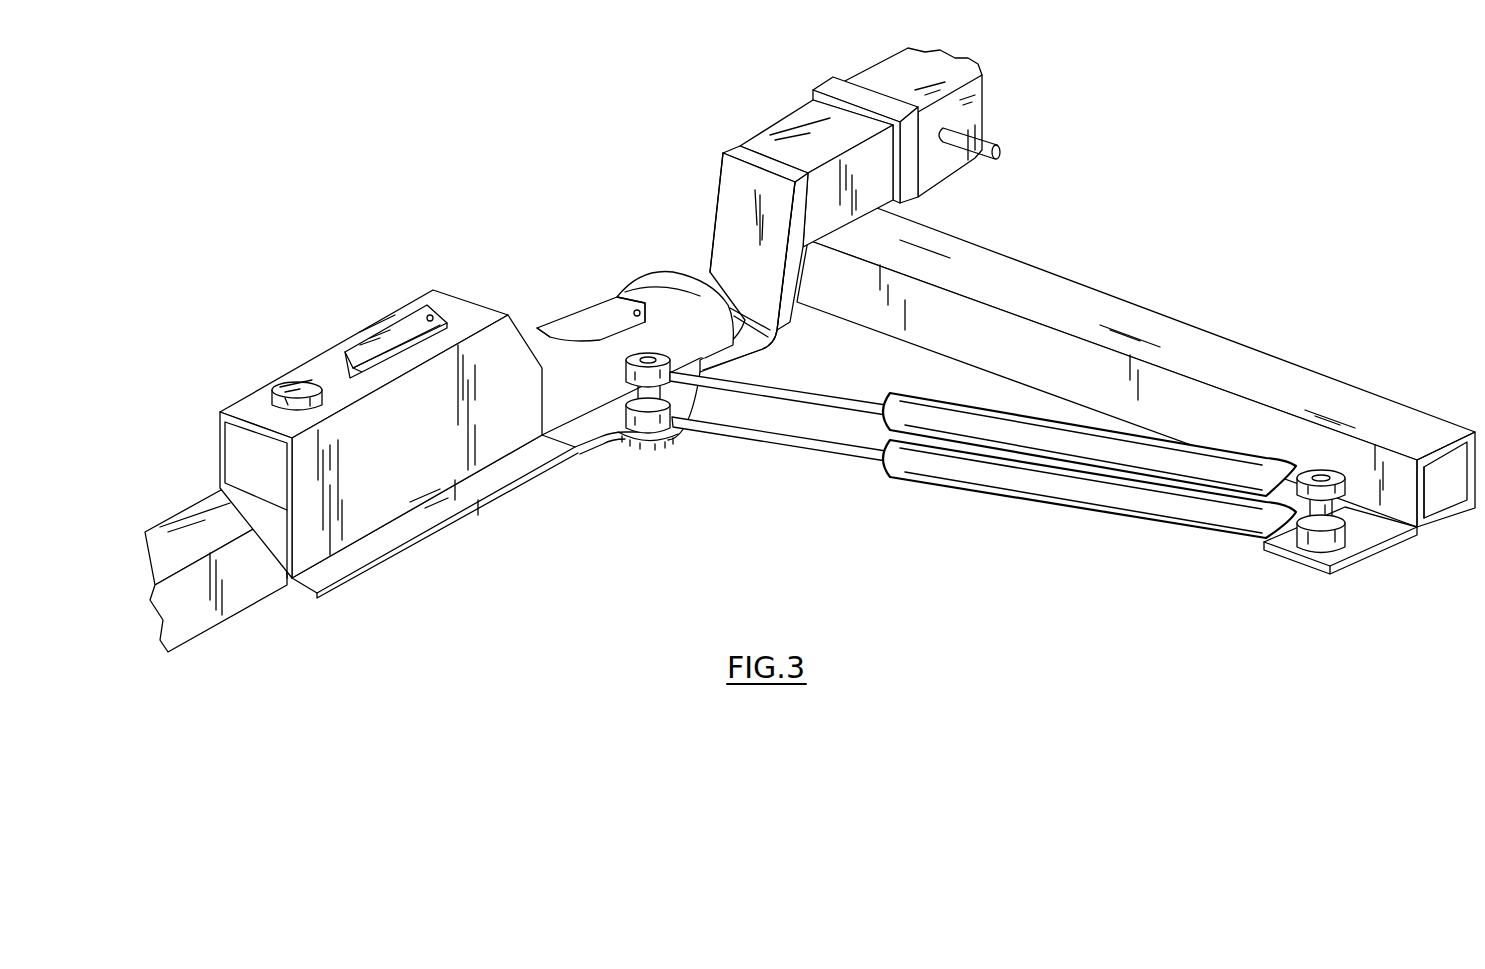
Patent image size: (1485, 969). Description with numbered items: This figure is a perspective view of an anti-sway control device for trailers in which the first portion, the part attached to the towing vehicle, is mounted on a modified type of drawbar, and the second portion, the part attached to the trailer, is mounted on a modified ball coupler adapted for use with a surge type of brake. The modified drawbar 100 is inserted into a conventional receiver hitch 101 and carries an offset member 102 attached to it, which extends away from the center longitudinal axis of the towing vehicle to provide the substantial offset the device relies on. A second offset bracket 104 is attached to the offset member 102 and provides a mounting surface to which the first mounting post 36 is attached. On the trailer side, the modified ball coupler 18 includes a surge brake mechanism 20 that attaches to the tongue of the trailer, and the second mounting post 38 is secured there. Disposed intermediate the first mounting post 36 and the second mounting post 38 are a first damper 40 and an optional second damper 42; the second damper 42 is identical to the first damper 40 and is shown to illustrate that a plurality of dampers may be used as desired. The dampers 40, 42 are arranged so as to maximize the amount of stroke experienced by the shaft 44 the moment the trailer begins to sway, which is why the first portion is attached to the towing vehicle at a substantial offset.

The modified ball coupler 18 is at (653, 286).
The surge brake mechanism 20 is at (396, 490).
The first mounting post 36 is at (1332, 527).
The second mounting post 38 is at (652, 405).
The first damper 40 is at (938, 410).
The second damper 42 is at (945, 468).
The shaft 44 is at (795, 390).
The modified drawbar 100 is at (782, 146).
The conventional receiver hitch 101 is at (893, 72).
The offset member 102 is at (1178, 345).
The second offset bracket 104 is at (1368, 530).